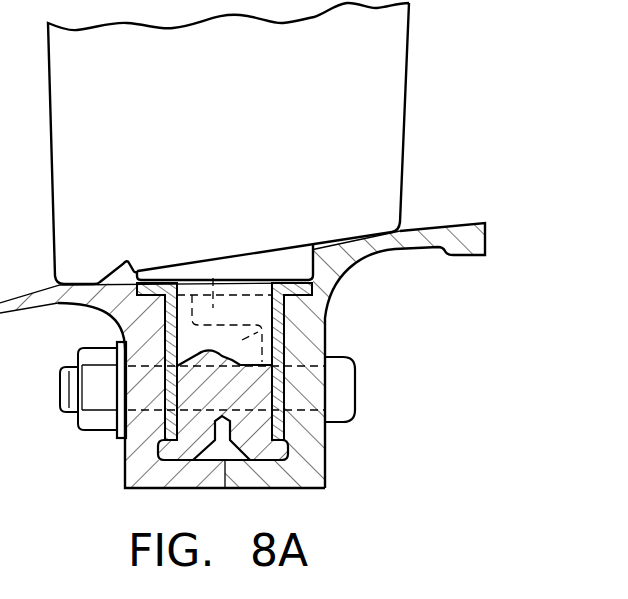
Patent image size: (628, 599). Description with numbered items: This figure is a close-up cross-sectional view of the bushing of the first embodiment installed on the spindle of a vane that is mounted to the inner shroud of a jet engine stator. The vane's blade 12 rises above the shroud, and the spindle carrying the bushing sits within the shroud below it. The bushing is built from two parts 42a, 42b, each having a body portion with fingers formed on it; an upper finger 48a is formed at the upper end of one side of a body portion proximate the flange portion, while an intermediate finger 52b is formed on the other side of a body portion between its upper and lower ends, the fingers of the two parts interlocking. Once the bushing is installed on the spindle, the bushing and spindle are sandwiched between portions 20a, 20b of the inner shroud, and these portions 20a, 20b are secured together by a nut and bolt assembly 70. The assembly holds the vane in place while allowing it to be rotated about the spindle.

The blade 12 is at (370, 137).
The upper finger 48a is at (212, 267).
The part 42a is at (280, 355).
The part 42b is at (164, 320).
The intermediate finger 52b is at (307, 327).
The nut and bolt assembly 70 is at (343, 403).
The portion of inner shroud 20a is at (327, 460).
The portion of inner shroud 20b is at (125, 470).